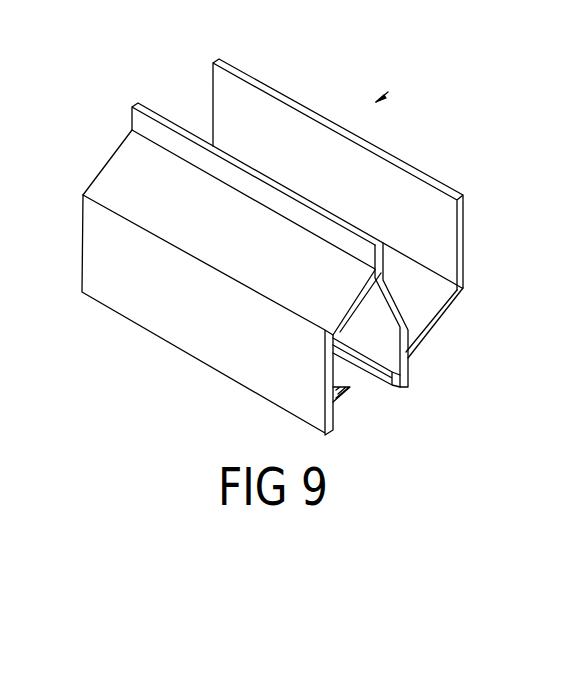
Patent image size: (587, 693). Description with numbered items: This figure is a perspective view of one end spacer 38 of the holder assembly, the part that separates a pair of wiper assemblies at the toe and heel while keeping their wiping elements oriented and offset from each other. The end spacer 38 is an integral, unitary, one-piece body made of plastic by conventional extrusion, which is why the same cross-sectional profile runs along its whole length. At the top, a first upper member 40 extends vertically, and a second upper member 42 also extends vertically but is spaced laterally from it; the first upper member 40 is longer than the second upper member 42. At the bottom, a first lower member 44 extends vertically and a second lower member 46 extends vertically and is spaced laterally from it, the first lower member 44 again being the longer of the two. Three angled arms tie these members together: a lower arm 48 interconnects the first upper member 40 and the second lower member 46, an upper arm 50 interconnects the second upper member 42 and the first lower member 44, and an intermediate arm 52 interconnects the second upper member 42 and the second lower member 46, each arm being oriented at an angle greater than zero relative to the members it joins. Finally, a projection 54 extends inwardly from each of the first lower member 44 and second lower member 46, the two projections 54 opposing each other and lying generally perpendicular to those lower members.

The end spacer 38 is at (388, 92).
The first upper member 40 is at (408, 192).
The second upper member 42 is at (140, 124).
The first lower member 44 is at (192, 312).
The second lower member 46 is at (410, 376).
The lower arm 48 is at (422, 303).
The upper arm 50 is at (135, 182).
The intermediate arm 52 is at (398, 302).
The projection 54 is at (371, 372).